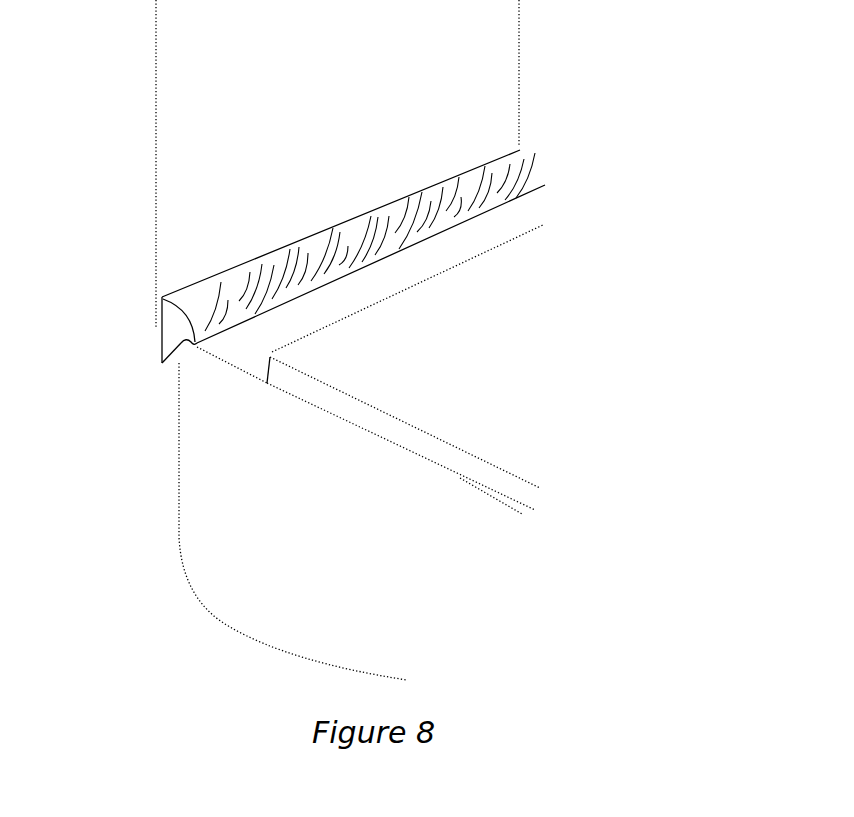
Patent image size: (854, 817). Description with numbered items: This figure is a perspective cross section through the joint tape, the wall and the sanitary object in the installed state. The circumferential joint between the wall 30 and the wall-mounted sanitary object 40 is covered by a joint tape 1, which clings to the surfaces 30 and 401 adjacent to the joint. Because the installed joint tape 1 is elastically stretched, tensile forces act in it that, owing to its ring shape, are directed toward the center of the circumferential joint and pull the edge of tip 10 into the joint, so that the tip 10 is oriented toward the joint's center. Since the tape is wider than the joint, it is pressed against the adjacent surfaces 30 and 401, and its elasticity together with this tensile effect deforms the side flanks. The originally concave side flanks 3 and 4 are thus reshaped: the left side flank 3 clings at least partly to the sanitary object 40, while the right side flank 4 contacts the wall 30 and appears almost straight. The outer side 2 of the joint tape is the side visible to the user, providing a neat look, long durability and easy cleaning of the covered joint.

The joint tape 1 is at (374, 255).
The outer side 2 is at (205, 305).
The left side flank 3 is at (177, 347).
The right side flank 4 is at (155, 330).
The edge of tip 10 is at (170, 367).
The wall 30 is at (277, 135).
The wall-mounted sanitary object 40 is at (328, 482).
The surface of the sanitary object adjacent to the joint 401 is at (265, 335).